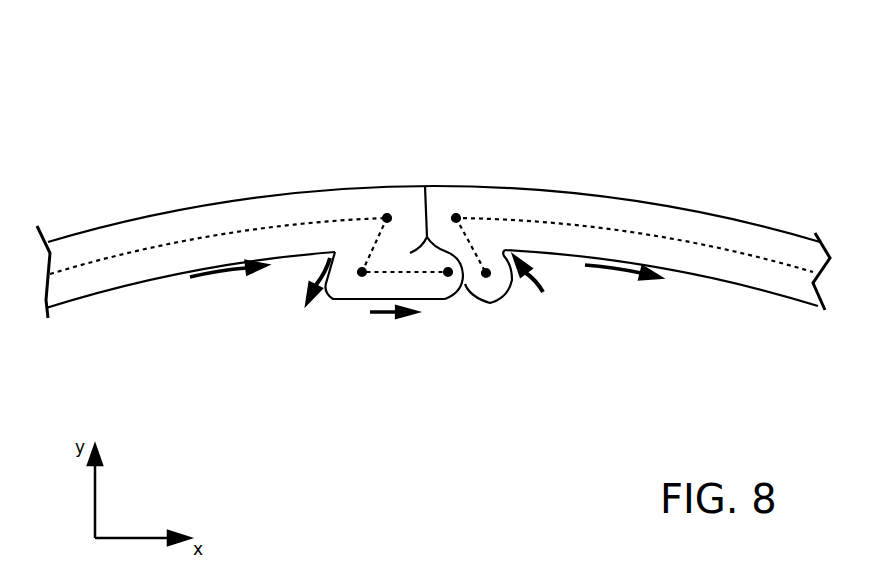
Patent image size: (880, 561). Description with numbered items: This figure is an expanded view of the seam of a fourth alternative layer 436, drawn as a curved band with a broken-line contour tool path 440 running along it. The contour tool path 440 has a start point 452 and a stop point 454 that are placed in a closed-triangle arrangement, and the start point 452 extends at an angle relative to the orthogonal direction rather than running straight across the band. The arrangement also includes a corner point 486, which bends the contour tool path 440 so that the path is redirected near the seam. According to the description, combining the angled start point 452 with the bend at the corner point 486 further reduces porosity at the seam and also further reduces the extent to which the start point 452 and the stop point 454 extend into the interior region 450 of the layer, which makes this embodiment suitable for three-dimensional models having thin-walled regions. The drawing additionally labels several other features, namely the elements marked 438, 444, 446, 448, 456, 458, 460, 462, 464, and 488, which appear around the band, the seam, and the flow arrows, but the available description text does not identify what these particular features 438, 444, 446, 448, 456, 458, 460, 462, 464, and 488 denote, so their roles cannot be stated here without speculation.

The layer 436 is at (667, 58).
The spring band 438 is at (596, 182).
The contour tool path 440 is at (103, 266).
The load path arrows 444 is at (207, 278).
The outer surface of band 446 is at (720, 215).
The inner surface of band 448 is at (792, 302).
The interior region 450 is at (340, 468).
The start point 452 is at (487, 273).
The stop point 454 is at (448, 272).
The folded lip 456 is at (543, 292).
The fold point 458 is at (456, 218).
The fold point 460 is at (387, 218).
The lip 462 is at (322, 268).
The tab 464 is at (424, 175).
The corner point 486 is at (362, 272).
The load direction arrow 488 is at (378, 312).